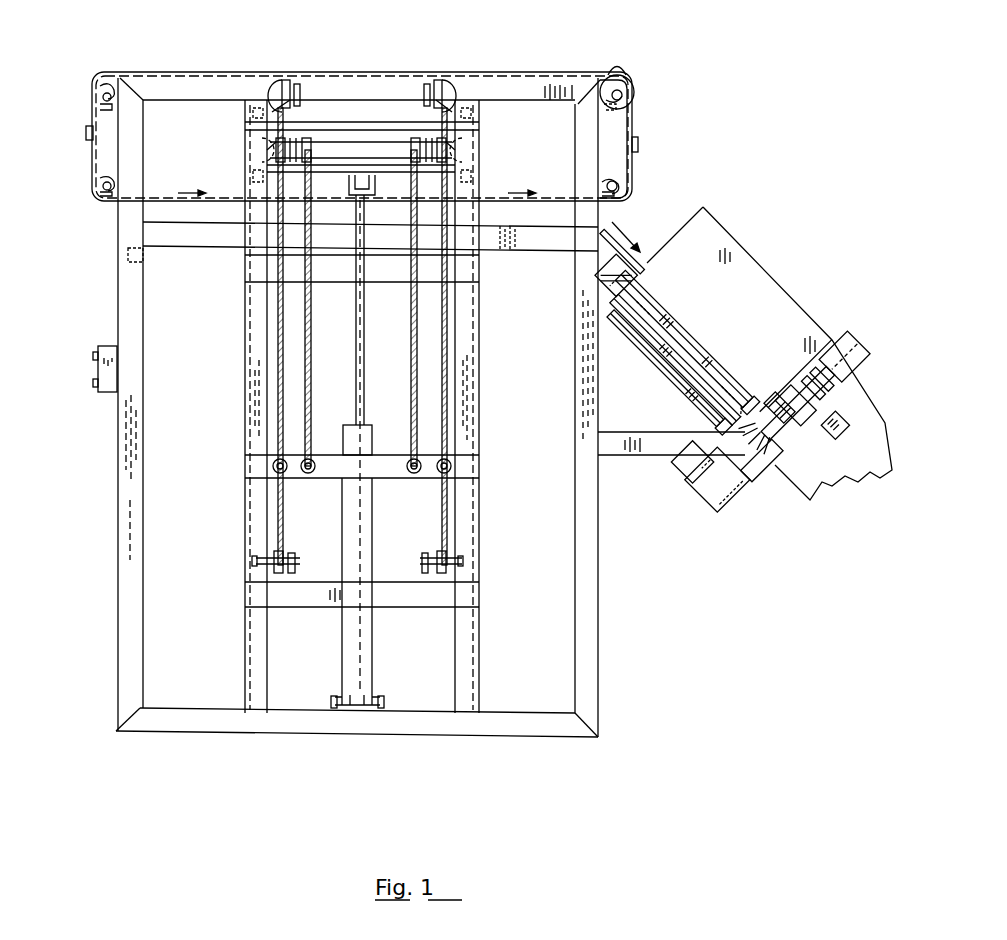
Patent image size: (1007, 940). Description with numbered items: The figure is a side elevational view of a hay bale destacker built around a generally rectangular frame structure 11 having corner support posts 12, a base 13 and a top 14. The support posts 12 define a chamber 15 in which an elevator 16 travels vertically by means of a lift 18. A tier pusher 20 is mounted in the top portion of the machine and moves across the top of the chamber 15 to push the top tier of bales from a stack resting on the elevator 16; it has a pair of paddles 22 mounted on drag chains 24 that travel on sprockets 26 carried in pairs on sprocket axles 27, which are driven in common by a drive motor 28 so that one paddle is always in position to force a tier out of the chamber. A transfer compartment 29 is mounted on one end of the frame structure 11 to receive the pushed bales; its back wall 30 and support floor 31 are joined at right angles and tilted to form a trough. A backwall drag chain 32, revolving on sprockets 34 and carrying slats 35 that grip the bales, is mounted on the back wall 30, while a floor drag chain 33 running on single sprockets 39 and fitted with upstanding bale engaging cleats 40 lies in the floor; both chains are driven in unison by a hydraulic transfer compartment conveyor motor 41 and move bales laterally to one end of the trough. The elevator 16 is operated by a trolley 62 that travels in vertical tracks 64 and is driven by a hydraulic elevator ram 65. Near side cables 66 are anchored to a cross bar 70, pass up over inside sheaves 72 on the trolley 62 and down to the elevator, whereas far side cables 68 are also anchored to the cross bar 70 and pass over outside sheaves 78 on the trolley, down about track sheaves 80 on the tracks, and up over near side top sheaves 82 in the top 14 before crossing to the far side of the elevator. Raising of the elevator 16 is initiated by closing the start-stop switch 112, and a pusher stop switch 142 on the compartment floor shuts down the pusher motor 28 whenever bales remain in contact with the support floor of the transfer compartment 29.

The frame structure 11 is at (100, 475).
The corner support posts 12 is at (140, 640).
The base 13 is at (190, 737).
The top 14 is at (173, 85).
The chamber 15 is at (203, 394).
The elevator 16 is at (198, 250).
The lift 18 is at (488, 398).
The tier pusher 20 is at (638, 128).
The paddles 22 is at (88, 134).
The drag chains 24 is at (500, 75).
The sprockets 26 is at (105, 80).
The sprocket axles 27 is at (98, 96).
The drive motor 28 is at (632, 72).
The transfer compartment 29 is at (714, 283).
The back wall 30 is at (712, 336).
The support floor 31 is at (836, 355).
The backwall drag chain 32 is at (663, 270).
The floor drag chain 33 is at (842, 420).
The sprockets 34 is at (665, 292).
The slats 35 is at (662, 328).
The single sprockets 39 is at (825, 396).
The bale engaging cleats 40 is at (842, 436).
The transfer compartment conveyor motor 41 is at (734, 499).
The trolley 62 is at (365, 121).
The vertical tracks 64 is at (248, 140).
The hydraulic elevator ram 65 is at (372, 522).
The near side cables 66 is at (311, 348).
The far side cables 68 is at (283, 112).
The cross bar 70 is at (393, 460).
The inside sheaves 72 is at (312, 150).
The outside sheaves 78 is at (274, 152).
The track sheaves 80 is at (290, 555).
The near side top sheaves 82 is at (286, 78).
The start-stop switch 112 is at (98, 372).
The pusher stop switch 142 is at (790, 425).